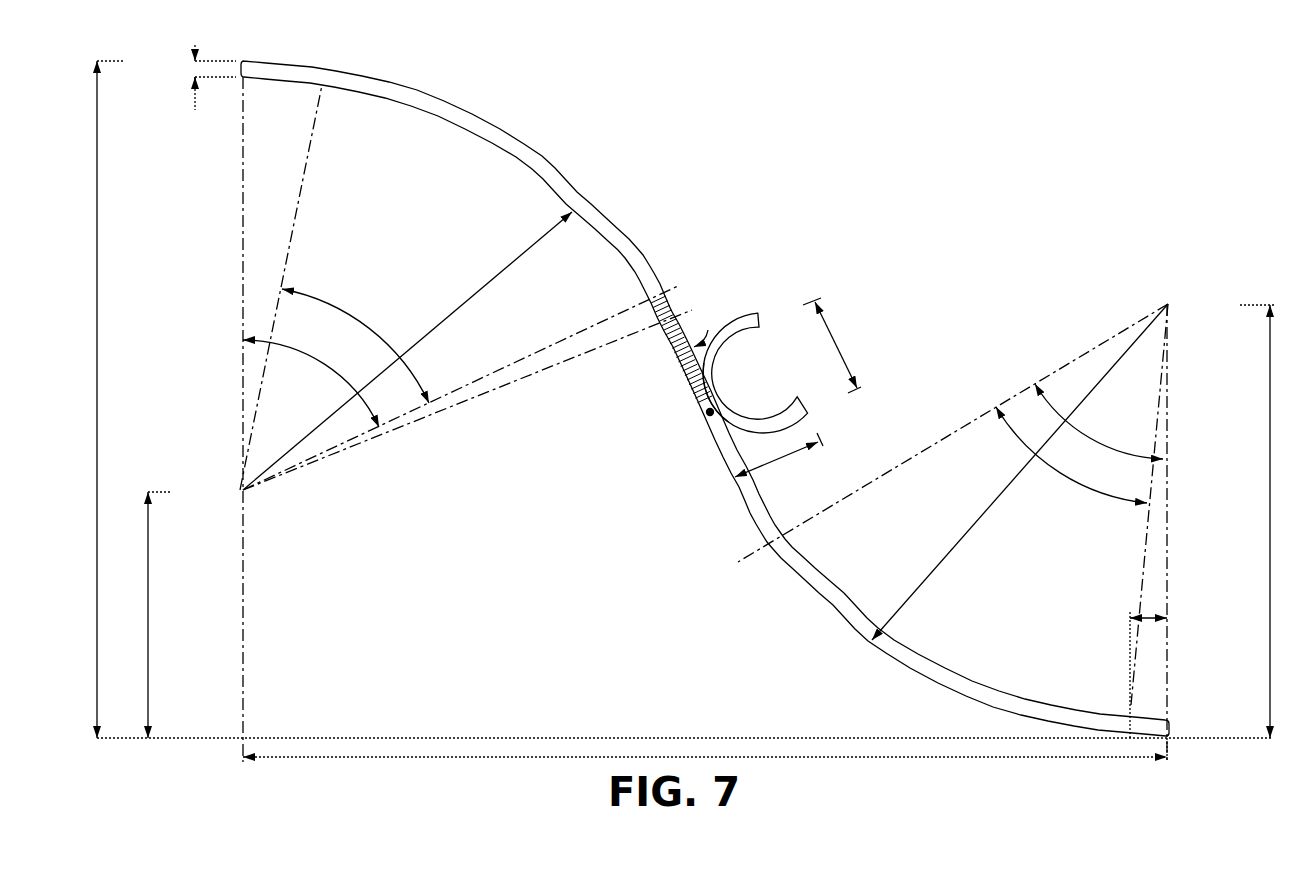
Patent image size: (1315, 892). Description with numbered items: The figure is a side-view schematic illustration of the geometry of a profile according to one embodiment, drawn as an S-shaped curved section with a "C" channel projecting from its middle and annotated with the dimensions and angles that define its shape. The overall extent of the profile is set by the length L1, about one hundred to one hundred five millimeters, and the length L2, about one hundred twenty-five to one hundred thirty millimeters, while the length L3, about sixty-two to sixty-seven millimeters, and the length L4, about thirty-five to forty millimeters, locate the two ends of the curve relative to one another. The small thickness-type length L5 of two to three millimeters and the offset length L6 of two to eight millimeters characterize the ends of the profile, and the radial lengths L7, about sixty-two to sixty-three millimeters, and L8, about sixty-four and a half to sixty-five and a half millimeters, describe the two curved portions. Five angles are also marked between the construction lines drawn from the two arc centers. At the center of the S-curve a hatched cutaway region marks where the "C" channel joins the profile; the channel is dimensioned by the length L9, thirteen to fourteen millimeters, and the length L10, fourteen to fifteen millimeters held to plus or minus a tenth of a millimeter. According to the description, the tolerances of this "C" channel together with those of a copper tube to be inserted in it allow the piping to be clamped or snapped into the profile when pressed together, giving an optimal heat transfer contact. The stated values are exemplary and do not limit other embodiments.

The dimension L1 is at (91, 399).
The dimension L2 is at (705, 760).
The dimension L3 is at (1270, 521).
The dimension L4 is at (146, 615).
The dimension L5 is at (201, 77).
The dimension L6 is at (1148, 668).
The dimension L7 is at (407, 351).
The dimension L8 is at (1020, 472).
The dimension L9 is at (779, 458).
The dimension L10 is at (832, 345).
The cutaway section of blade cutaway is at (705, 424).